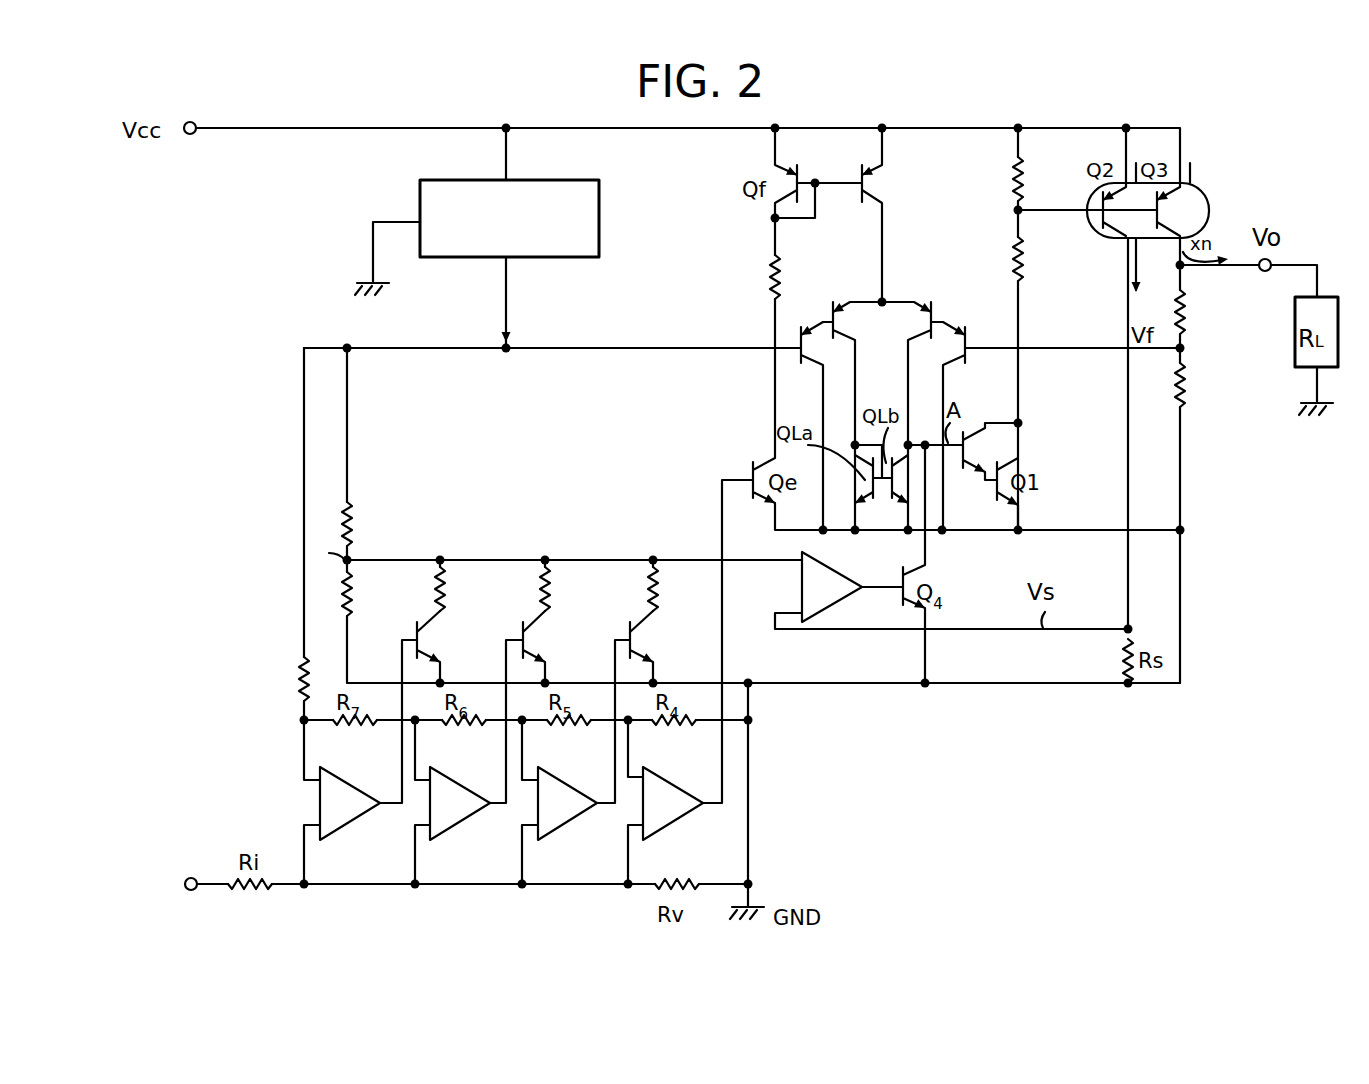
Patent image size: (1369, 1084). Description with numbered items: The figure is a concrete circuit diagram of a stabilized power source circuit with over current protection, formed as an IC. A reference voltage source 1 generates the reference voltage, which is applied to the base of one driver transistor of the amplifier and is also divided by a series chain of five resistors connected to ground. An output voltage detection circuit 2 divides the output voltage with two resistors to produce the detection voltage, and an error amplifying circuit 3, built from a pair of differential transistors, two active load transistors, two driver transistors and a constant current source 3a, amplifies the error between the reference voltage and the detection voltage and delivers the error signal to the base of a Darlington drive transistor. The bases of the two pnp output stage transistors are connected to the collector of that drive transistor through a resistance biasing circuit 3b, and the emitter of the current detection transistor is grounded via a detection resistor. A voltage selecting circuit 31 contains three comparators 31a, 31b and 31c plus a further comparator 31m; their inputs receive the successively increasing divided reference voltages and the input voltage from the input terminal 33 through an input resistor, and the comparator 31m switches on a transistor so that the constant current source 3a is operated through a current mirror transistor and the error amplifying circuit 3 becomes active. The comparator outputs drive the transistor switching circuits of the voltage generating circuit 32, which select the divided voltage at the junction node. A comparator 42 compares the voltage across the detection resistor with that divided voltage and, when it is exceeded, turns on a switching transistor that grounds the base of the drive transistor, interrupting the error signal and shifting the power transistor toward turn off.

The reference voltage source 1 is at (600, 190).
The output voltage detection circuit 2 is at (1190, 416).
The error amplifying circuit 3 is at (930, 275).
The constant current source 3a is at (883, 185).
The resistance biasing circuit 3b is at (1033, 228).
The voltage selecting circuit 31 is at (528, 708).
The comparator 31a is at (572, 822).
The comparator 31b is at (465, 822).
The comparator 31c is at (355, 822).
The comparator 31m is at (678, 822).
The voltage generating circuit 32 is at (590, 545).
The input terminal 33 is at (193, 874).
The comparator 42 is at (843, 605).